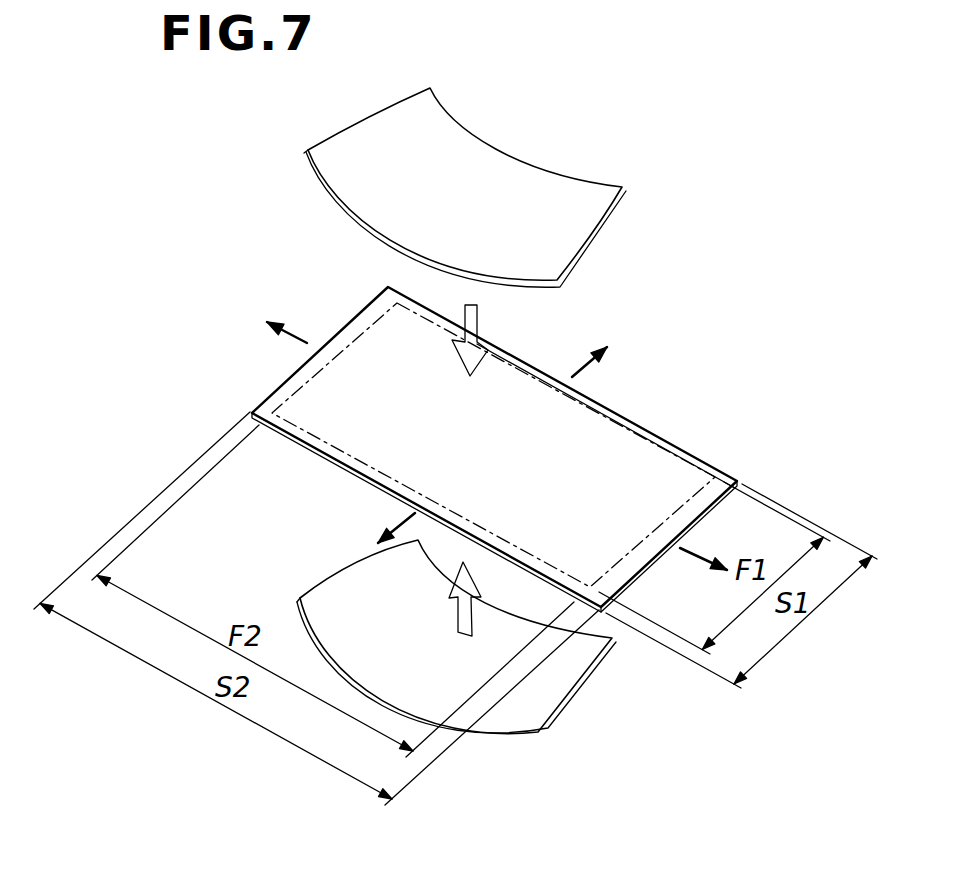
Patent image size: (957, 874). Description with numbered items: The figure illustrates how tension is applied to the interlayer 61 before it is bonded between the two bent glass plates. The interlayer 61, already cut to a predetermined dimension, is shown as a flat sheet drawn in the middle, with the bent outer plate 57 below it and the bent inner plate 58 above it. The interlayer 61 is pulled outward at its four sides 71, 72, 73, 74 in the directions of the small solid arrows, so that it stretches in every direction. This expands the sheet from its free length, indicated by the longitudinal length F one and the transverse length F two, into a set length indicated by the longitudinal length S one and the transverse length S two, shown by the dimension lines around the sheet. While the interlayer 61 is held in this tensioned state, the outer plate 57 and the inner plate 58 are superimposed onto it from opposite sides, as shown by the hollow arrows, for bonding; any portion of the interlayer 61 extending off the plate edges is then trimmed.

The outer plate 57 is at (535, 733).
The inner plate 58 is at (490, 143).
The interlayer 61 is at (633, 417).
The side of the interlayer 71 is at (540, 367).
The side of the interlayer 72 is at (337, 460).
The side of the interlayer 73 is at (282, 378).
The side of the interlayer 74 is at (642, 573).